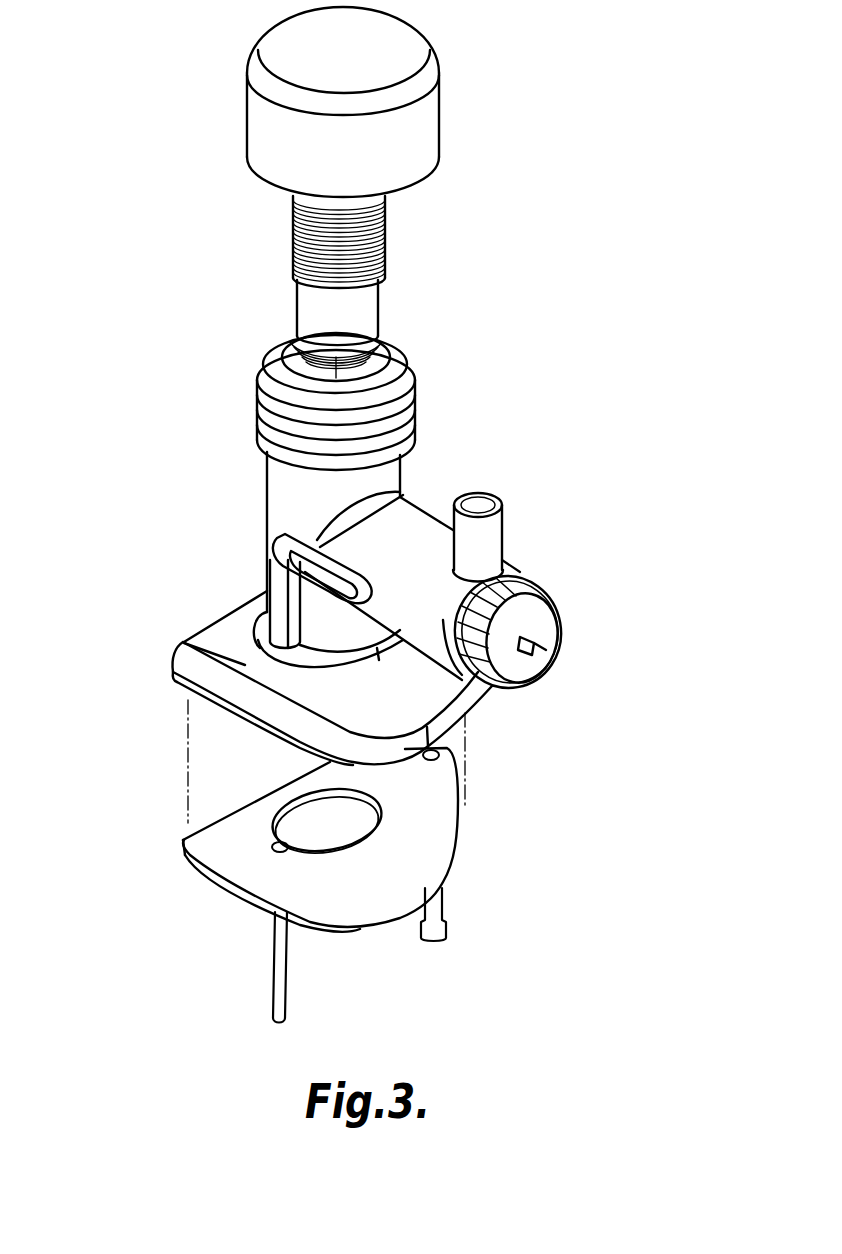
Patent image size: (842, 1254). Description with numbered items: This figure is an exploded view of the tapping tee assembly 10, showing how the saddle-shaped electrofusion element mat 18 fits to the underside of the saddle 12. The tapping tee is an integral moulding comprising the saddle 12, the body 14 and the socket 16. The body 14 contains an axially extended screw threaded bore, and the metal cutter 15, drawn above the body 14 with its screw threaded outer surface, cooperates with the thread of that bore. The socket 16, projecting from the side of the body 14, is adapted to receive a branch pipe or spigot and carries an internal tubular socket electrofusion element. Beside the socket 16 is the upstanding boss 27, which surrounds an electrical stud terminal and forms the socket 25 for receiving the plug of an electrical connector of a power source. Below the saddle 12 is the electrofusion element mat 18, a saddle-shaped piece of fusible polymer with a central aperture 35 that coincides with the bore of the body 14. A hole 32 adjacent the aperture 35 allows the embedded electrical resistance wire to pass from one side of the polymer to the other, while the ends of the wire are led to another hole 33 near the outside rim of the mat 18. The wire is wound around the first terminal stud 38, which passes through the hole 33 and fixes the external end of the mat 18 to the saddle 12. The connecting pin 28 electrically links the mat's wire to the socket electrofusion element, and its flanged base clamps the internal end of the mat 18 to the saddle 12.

The tapping tee assembly 10 is at (561, 295).
The saddle 12 is at (183, 641).
The body 14 is at (292, 498).
The metal cutter 15 is at (383, 270).
The socket 16 is at (452, 680).
The saddle-shaped electrofusion element mat 18 is at (437, 846).
The socket 25 is at (505, 535).
The upstanding boss 27 is at (482, 507).
The connecting pin 28 is at (281, 999).
The hole 32 is at (280, 843).
The hole 33 is at (445, 751).
The central aperture 35 is at (352, 848).
The first terminal stud 38 is at (440, 915).